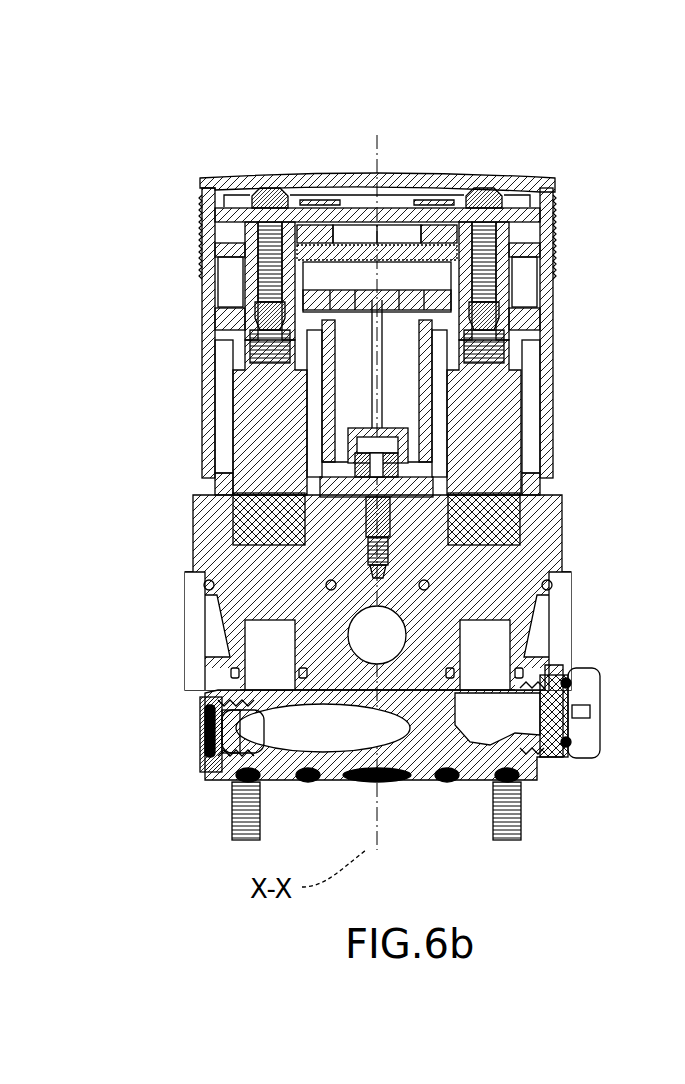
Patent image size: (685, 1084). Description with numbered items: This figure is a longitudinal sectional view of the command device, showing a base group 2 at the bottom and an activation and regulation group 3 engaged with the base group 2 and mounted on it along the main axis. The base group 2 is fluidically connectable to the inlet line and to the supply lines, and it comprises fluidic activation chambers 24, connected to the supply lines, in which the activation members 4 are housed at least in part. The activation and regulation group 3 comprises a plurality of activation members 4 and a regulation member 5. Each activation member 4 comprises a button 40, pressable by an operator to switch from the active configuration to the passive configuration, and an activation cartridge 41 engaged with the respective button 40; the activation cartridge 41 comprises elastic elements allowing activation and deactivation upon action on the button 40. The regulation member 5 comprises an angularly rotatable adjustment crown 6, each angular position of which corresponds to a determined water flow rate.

The base group 2 is at (140, 660).
The activation and regulation group 3 is at (136, 306).
The activation member 4 is at (270, 160).
The regulation member 5 is at (328, 258).
The adjustment crown 6 is at (196, 228).
The fluidic activation chamber 24 is at (208, 625).
The button 40 is at (340, 178).
The activation cartridge 41 is at (207, 510).